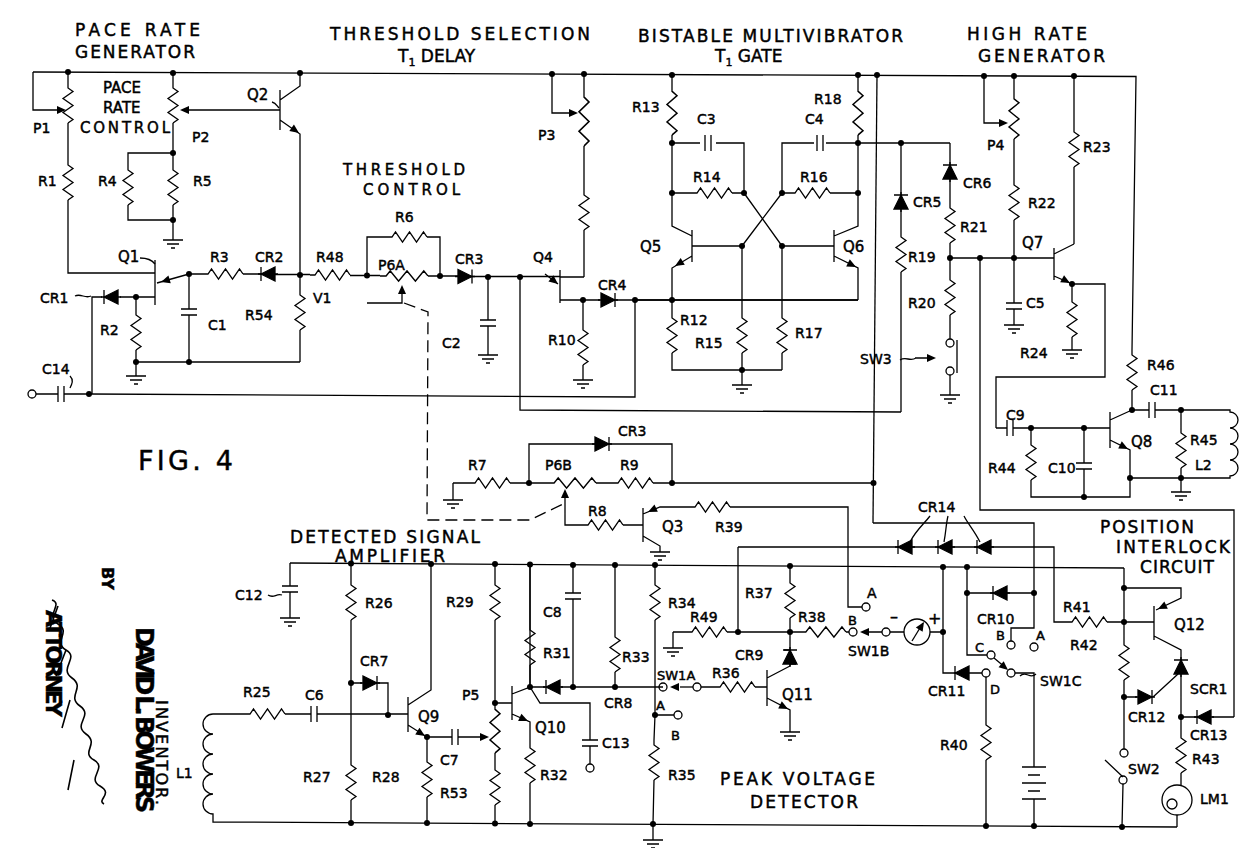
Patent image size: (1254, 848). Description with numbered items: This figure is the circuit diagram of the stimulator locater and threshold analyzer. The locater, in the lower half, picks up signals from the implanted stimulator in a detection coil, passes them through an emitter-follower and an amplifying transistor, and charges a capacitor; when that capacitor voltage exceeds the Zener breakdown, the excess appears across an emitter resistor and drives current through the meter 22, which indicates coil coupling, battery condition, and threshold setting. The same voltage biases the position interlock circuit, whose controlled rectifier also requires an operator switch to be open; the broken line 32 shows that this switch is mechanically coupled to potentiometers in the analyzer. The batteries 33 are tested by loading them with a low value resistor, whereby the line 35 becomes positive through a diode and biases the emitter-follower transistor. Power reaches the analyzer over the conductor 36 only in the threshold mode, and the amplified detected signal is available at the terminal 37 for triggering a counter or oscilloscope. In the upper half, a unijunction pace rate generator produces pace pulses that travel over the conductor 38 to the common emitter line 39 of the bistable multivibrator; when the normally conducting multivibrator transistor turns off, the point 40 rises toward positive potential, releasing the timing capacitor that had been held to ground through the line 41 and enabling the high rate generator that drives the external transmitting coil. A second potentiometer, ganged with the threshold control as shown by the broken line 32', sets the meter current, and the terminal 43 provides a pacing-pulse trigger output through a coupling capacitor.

The meter 22 is at (912, 647).
The broken line 32 is at (1103, 767).
The broken line 32' is at (475, 411).
The batteries 33 is at (1048, 778).
The line 35 is at (548, 563).
The conductor 36 is at (1036, 525).
The terminal 37 is at (596, 772).
The conductor 38 is at (309, 396).
The common emitter line 39 is at (828, 302).
The point 40 is at (866, 143).
The line 41 is at (778, 414).
The terminal 43 is at (32, 398).